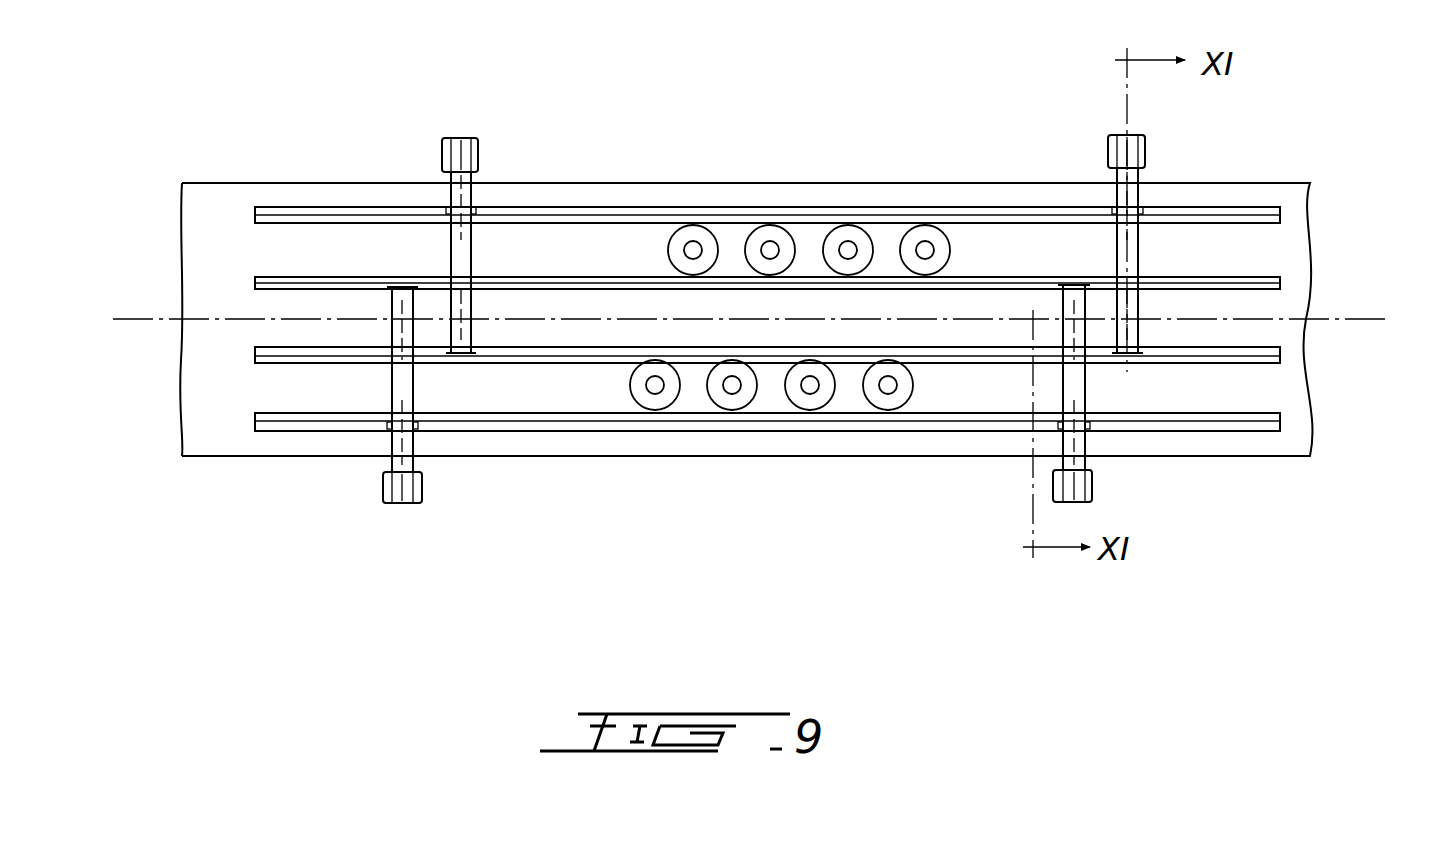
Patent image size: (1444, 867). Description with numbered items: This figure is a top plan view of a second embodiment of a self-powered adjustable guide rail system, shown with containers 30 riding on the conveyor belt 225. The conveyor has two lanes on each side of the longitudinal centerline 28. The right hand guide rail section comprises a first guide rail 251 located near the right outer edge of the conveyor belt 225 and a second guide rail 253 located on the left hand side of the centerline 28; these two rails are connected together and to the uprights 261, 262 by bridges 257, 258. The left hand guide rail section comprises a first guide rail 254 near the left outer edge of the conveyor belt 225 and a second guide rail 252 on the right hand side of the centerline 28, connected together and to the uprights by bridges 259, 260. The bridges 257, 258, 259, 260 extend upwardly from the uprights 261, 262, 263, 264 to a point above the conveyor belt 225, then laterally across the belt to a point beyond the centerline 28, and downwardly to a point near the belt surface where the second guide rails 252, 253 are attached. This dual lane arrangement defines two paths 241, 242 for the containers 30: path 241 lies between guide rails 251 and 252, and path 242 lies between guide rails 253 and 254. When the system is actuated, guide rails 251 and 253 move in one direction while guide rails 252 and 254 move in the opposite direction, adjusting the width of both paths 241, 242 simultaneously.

The conveyor belt 225 is at (213, 456).
The path 241 is at (1272, 247).
The path 242 is at (1272, 386).
The centerline 28 is at (1355, 318).
The containers 30 is at (695, 230).
The first guide rail 251 is at (287, 208).
The second guide rail 252 is at (258, 278).
The second guide rail 253 is at (262, 349).
The first guide rail 254 is at (298, 431).
The bridge 257 is at (463, 228).
The bridge 258 is at (1131, 242).
The bridge 259 is at (404, 400).
The bridge 260 is at (1076, 398).
The upright 261 is at (479, 152).
The upright 262 is at (1108, 147).
The upright 263 is at (423, 488).
The upright 264 is at (1054, 485).